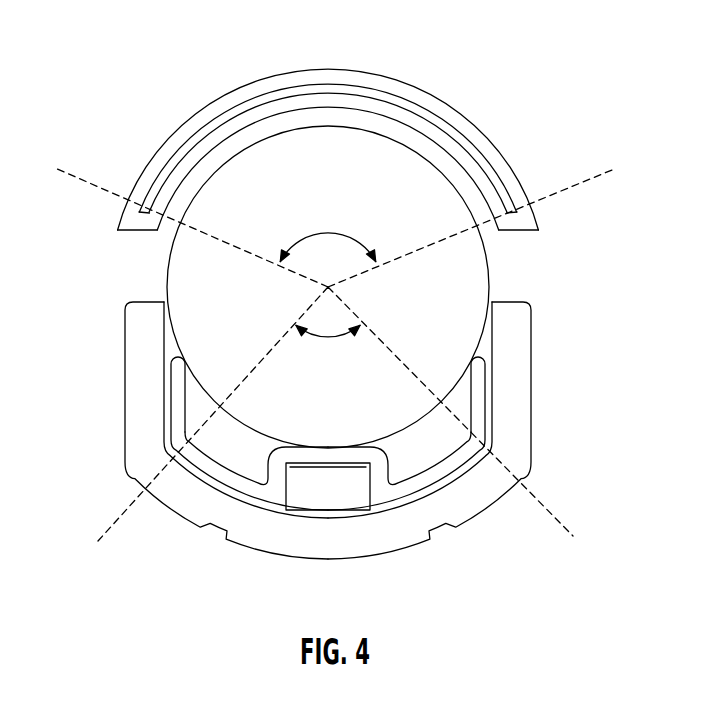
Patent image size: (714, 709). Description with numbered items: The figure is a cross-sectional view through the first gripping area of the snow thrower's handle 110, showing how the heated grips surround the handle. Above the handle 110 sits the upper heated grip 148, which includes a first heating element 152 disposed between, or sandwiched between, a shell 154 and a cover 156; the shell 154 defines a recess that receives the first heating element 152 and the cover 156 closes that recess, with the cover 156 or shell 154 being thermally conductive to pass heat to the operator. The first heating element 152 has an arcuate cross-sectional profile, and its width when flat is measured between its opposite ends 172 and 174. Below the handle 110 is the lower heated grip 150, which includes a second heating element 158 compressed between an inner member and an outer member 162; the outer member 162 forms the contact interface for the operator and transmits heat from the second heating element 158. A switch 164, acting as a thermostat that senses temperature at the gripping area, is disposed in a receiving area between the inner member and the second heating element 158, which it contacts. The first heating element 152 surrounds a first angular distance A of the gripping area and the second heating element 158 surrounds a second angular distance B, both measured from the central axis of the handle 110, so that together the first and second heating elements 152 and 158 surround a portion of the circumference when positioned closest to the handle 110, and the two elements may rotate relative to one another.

The handle 110 is at (470, 266).
The upper heated grip 148 is at (325, 131).
The lower heated grip 150 is at (286, 458).
The first heating element 152 is at (463, 142).
The shell 154 is at (420, 127).
The cover 156 is at (513, 187).
The second heating element 158 is at (387, 507).
The outer member 162 is at (468, 517).
The switch 164 is at (327, 497).
The end of first heating element 172 is at (137, 212).
The end of first heating element 174 is at (519, 212).
The first angular distance A is at (340, 233).
The second angular distance B is at (327, 338).